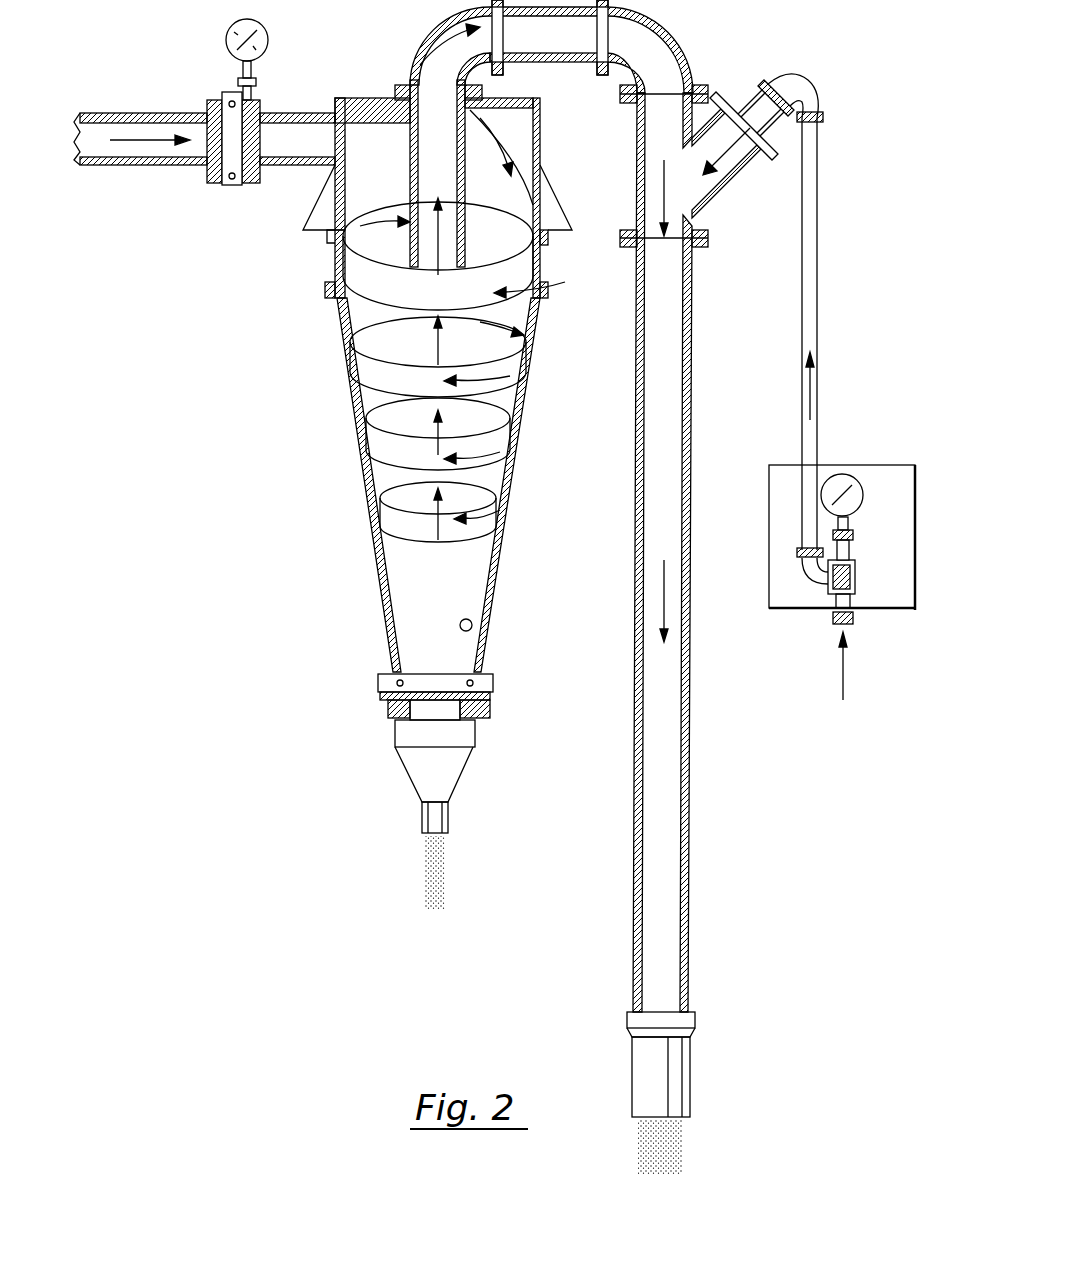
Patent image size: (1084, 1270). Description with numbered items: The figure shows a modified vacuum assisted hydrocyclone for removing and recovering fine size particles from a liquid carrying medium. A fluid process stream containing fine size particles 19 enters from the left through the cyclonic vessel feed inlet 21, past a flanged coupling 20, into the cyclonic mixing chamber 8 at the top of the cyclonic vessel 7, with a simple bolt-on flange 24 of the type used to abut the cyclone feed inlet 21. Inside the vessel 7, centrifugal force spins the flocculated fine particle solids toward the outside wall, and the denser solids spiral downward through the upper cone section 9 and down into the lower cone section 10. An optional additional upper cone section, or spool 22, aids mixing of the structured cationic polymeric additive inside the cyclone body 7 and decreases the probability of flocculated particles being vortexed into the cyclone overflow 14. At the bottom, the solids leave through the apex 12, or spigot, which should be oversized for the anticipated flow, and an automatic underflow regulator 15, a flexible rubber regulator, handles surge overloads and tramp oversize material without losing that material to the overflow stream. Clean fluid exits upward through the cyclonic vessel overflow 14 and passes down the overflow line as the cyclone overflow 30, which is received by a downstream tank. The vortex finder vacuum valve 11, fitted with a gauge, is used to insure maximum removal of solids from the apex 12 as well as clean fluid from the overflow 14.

The cyclonic vessel 7 is at (322, 366).
The cyclonic mixing chamber 8 is at (372, 115).
The upper cone section 9 is at (530, 314).
The lower cone section 10 is at (472, 626).
The vortex finder vacuum valve 11 is at (874, 450).
The apex 12 is at (392, 705).
The cyclonic vessel overflow 14 is at (652, 44).
The automatic underflow regulator 15 is at (408, 779).
The fluid stream containing fine size particles 19 is at (146, 162).
The inlet flange coupling 20 is at (230, 185).
The cyclonic vessel feed inlet 21 is at (310, 111).
The spool 22 is at (552, 235).
The bolt-on flange 24 is at (388, 680).
The cyclone overflow 30 is at (678, 871).